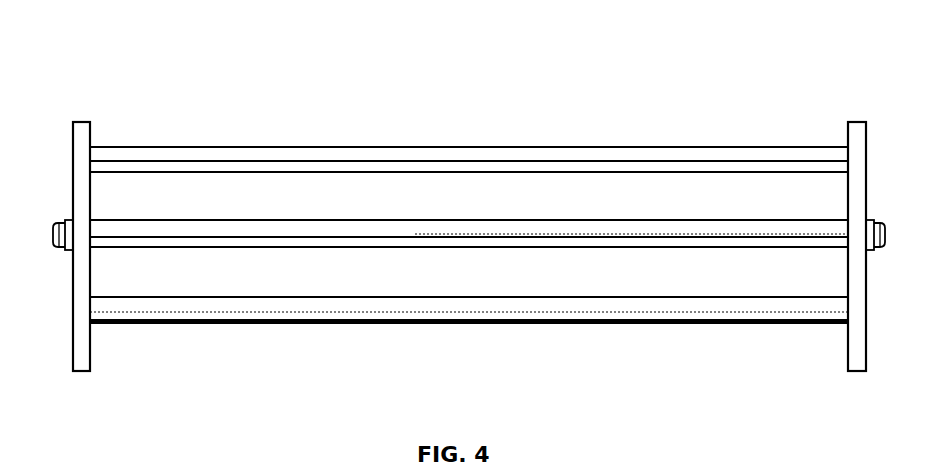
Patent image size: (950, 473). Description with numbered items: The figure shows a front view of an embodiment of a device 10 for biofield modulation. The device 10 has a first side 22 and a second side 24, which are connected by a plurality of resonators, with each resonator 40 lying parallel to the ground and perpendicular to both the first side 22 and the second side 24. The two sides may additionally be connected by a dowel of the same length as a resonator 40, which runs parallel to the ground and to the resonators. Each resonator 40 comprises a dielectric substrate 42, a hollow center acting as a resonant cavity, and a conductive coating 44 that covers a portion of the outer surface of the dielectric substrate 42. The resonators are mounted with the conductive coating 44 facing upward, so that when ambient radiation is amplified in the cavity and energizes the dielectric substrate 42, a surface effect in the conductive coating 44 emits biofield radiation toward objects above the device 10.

The device 10 is at (103, 53).
The first side 22 is at (78, 272).
The second side 24 is at (866, 270).
The resonator 40 is at (288, 337).
The dielectric substrate 42 is at (580, 323).
The conductive coating 44 is at (700, 314).